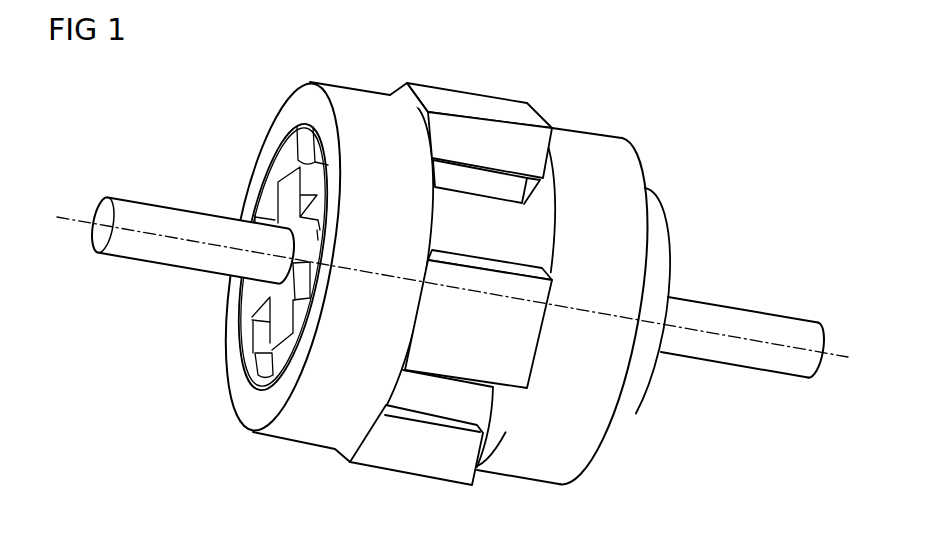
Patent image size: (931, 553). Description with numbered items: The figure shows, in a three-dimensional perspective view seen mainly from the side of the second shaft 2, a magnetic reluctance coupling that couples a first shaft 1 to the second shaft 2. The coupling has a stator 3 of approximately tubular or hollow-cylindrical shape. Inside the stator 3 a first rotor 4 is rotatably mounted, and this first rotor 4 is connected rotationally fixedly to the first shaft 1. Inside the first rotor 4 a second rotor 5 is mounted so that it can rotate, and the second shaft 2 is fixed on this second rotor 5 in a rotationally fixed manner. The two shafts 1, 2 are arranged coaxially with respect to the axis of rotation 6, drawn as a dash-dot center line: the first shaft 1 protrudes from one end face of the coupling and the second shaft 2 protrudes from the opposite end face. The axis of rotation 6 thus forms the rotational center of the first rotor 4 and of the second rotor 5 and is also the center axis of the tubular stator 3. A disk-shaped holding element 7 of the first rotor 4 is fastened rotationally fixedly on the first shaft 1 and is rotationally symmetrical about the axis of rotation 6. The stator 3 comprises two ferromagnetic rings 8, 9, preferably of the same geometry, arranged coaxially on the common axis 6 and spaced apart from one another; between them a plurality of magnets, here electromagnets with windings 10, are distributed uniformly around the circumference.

The first shaft 1 is at (762, 323).
The second shaft 2 is at (155, 217).
The stator 3 is at (270, 92).
The first rotor 4 is at (283, 148).
The second rotor 5 is at (263, 201).
The axis of rotation 6 is at (840, 350).
The disk-shaped holding element 7 is at (657, 223).
The ferromagnetic ring 8 is at (370, 103).
The ferromagnetic ring 9 is at (627, 160).
The windings 10 is at (478, 105).